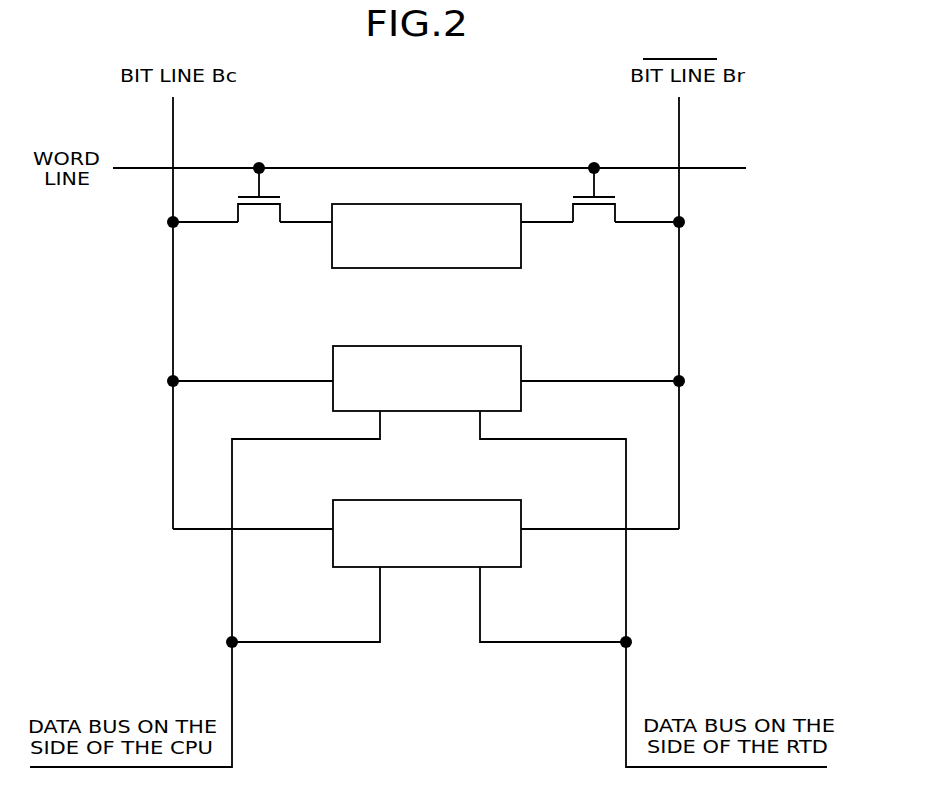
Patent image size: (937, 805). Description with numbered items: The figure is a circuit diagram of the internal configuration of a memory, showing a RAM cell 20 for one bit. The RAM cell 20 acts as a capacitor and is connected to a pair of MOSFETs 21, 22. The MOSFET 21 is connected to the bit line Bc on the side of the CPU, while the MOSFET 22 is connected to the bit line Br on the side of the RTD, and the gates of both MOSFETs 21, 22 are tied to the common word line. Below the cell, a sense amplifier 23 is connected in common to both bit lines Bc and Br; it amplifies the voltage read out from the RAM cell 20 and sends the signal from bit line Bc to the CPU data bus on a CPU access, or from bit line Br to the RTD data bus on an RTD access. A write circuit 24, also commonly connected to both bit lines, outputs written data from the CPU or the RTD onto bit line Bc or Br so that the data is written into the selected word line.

The RAM cell 20 is at (521, 252).
The MOSFET 21 is at (285, 213).
The MOSFET 22 is at (618, 213).
The sense amplifier 23 is at (521, 400).
The write circuit 24 is at (521, 549).